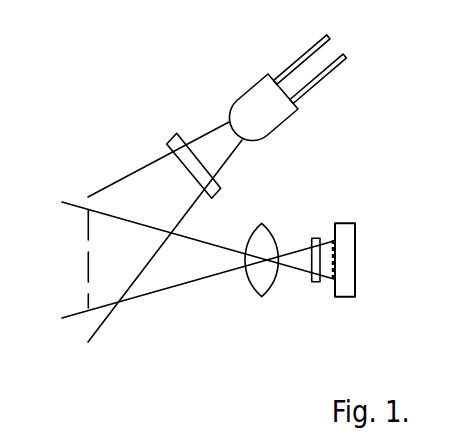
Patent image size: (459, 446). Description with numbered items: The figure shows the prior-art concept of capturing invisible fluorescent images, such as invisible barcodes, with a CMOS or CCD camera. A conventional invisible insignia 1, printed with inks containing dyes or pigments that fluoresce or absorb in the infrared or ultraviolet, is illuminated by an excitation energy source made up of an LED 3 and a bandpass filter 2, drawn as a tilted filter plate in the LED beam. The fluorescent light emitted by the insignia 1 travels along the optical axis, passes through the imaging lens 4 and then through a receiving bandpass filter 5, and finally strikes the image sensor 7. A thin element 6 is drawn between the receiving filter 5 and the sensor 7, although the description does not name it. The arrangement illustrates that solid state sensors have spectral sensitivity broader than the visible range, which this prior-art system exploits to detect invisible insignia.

The invisible insignia 1 is at (85, 240).
The bandpass filter 2 is at (162, 135).
The LED 3 is at (252, 77).
The imaging lens 4 is at (252, 295).
The receiving bandpass filter 5 is at (313, 290).
The detector active area / aperture 6 is at (333, 248).
The image sensor 7 is at (358, 278).